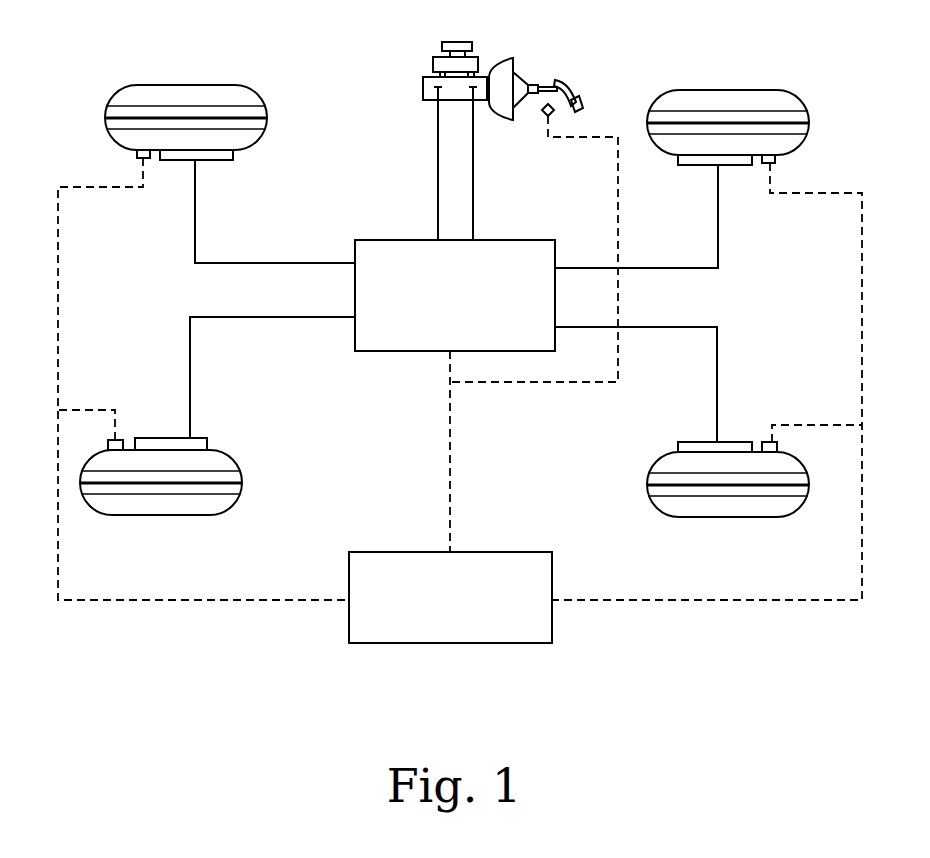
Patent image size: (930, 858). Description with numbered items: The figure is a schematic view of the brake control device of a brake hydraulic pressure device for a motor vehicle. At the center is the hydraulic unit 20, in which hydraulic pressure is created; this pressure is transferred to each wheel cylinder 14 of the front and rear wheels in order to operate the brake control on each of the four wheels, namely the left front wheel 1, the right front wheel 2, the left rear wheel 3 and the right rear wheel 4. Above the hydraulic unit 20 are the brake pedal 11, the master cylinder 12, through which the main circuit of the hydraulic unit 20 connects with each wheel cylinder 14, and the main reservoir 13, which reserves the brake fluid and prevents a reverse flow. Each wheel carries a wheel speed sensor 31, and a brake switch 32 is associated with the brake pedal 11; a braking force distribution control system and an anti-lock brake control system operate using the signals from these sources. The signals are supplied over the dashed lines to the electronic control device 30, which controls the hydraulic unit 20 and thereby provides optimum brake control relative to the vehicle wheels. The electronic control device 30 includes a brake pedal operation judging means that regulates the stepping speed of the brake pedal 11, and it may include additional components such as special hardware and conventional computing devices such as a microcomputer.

The left front wheel 1 is at (167, 515).
The right front wheel 2 is at (188, 85).
The left rear wheel 3 is at (715, 517).
The right rear wheel 4 is at (732, 90).
The brake pedal 11 is at (568, 86).
The master cylinder 12 is at (423, 87).
The main reservoir 13 is at (433, 63).
The wheel cylinder 14 is at (223, 160).
The hydraulic unit 20 is at (397, 351).
The electronic control device 30 is at (552, 580).
The wheel speed sensor 31 is at (148, 160).
The brake switch 32 is at (543, 113).